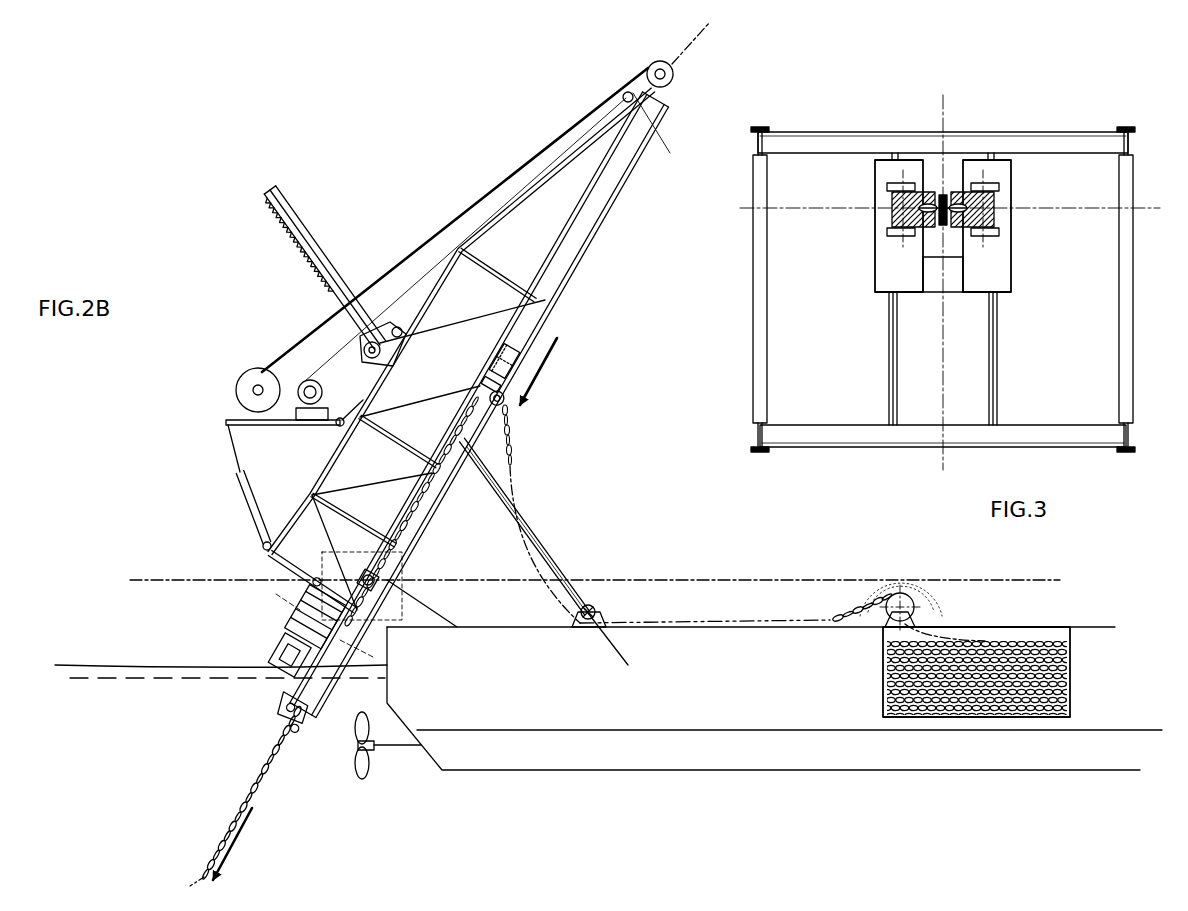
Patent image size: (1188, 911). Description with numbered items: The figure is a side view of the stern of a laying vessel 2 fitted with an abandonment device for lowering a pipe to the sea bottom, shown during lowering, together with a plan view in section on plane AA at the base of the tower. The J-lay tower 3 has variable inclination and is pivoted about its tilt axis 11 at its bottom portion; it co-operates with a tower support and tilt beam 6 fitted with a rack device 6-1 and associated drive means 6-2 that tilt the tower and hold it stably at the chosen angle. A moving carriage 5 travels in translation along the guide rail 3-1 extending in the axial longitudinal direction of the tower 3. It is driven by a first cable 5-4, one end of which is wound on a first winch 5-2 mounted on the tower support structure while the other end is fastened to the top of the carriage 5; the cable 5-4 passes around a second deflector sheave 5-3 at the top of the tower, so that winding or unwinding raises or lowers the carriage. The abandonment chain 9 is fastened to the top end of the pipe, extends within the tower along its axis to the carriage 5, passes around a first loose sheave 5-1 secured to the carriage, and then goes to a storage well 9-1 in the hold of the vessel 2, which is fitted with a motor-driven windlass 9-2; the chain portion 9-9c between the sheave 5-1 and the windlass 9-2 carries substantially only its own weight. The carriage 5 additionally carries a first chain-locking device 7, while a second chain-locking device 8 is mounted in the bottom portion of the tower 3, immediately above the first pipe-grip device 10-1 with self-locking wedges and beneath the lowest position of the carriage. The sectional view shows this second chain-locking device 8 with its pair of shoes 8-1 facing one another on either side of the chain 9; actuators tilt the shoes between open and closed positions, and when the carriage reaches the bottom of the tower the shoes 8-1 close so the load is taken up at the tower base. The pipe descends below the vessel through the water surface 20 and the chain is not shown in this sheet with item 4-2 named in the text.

In FIG. 2B, the vessel 2 is at (687, 627).
In FIG. 2B, the water surface 20 is at (126, 666).
In FIG. 2B, the tower 3 is at (556, 320).
In FIG. 3, the tower 3 is at (745, 318).
In FIG. 2B, the guide rail 3-1 is at (566, 252).
In FIG. 2B, the tilt axis 11 is at (362, 574).
In FIG. 2B, the moving carriage 5 is at (492, 364).
In FIG. 2B, the first loose sheave 5-1 is at (506, 393).
In FIG. 2B, the first winch 5-2 is at (250, 382).
In FIG. 2B, the second deflector sheave 5-3 is at (674, 78).
In FIG. 2B, the first cable 5-4 is at (472, 196).
In FIG. 2B, the pulley 4-2 is at (308, 386).
In FIG. 2B, the tower support and tilt beam 6 is at (352, 282).
In FIG. 2B, the rack device 6-1 is at (284, 222).
In FIG. 2B, the drive means 6-2 is at (362, 366).
In FIG. 2B, the first chain-locking device 7 is at (490, 402).
In FIG. 2B, the second chain-locking device 8 is at (298, 611).
In FIG. 3, the second chain-locking device 8 is at (878, 220).
In FIG. 3, the shoes 8-1 is at (1004, 220).
In FIG. 2B, the abandonment chain 9 is at (270, 746).
In FIG. 3, the abandonment chain 9 is at (940, 232).
In FIG. 2B, the storage well 9-1 is at (984, 641).
In FIG. 2B, the motor-driven windlass 9-2 is at (912, 598).
In FIG. 2B, the chain end 9-9c is at (512, 452).
In FIG. 2B, the first pipe-grip device 10-1 is at (292, 656).